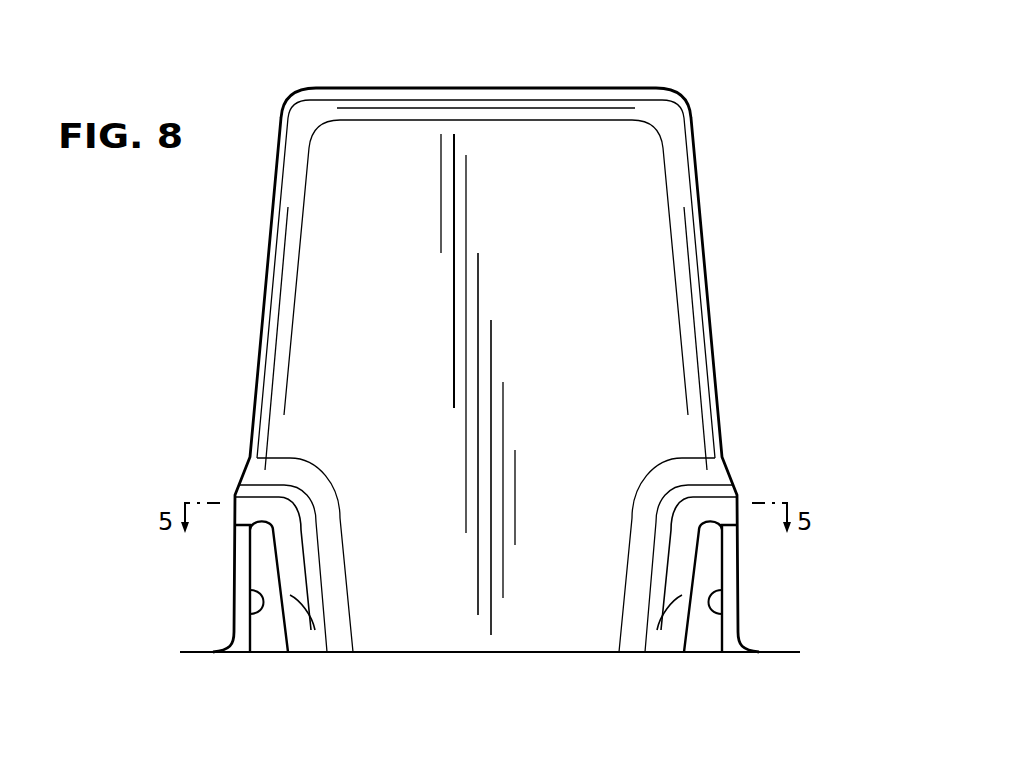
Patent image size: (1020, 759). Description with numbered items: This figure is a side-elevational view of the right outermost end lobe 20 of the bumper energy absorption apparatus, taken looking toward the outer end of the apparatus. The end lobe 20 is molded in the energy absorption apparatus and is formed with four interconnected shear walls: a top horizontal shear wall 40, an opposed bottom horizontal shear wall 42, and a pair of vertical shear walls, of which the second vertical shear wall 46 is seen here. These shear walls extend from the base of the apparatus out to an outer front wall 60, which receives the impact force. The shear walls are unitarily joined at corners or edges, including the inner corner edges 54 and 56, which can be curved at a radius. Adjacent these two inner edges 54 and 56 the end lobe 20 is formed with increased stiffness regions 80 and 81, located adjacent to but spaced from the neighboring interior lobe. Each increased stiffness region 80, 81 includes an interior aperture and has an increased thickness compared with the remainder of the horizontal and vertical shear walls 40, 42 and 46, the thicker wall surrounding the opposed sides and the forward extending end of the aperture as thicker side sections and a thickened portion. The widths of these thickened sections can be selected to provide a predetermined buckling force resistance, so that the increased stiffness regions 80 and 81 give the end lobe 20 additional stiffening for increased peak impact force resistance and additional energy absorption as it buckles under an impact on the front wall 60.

The right outermost end lobe 20 is at (247, 68).
The outer front wall 60 is at (530, 88).
The second vertical shear wall 46 is at (605, 188).
The bottom horizontal shear wall 42 is at (702, 206).
The corner or edge 54 is at (700, 289).
The top horizontal shear wall 40 is at (265, 263).
The corner or edge 56 is at (265, 305).
The increased stiffness region 80 is at (233, 442).
The increased stiffness region 81 is at (741, 442).